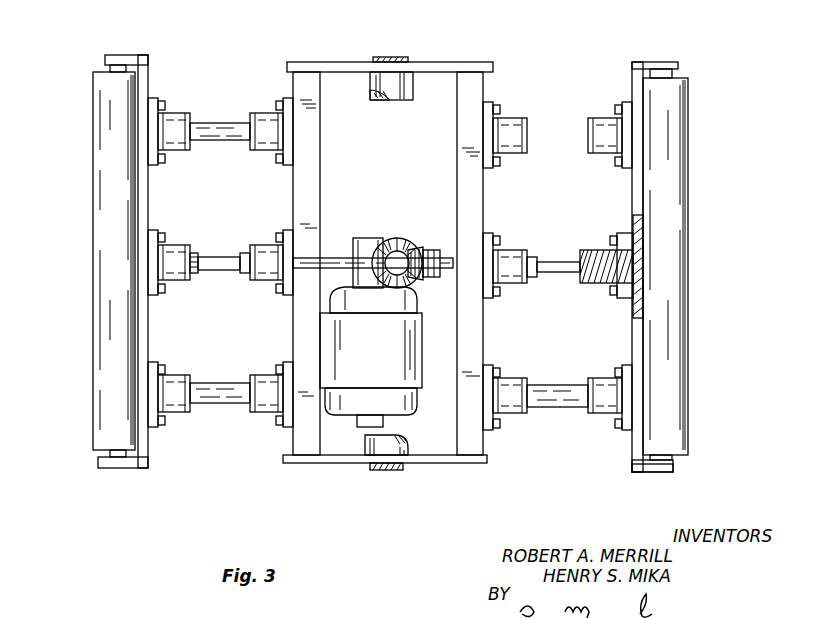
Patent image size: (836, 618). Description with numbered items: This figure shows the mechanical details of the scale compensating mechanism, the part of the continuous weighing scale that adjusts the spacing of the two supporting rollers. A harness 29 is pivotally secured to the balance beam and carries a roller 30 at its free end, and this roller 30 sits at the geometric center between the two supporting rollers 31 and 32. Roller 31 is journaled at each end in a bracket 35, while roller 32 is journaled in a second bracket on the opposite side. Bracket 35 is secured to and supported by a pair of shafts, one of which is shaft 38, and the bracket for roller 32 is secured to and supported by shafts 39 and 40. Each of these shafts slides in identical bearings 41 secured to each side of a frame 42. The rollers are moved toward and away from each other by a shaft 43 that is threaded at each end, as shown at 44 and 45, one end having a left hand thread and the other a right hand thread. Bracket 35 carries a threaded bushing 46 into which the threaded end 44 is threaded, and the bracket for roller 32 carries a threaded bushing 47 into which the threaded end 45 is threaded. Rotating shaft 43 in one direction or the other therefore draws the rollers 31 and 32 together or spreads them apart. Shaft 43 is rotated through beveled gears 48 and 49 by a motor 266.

The harness 29 is at (395, 60).
The roller 30 is at (395, 88).
The supporting roller 31 is at (670, 143).
The supporting roller 32 is at (108, 380).
The bracket 35 is at (645, 465).
The shaft 38 is at (558, 395).
The shaft 39 is at (203, 132).
The shaft 40 is at (228, 395).
The bearing 41 is at (258, 124).
The frame 42 is at (304, 80).
The shaft 43 is at (223, 263).
The threaded end 44 is at (580, 275).
The threaded end 45 is at (196, 271).
The threaded bushing 46 is at (600, 282).
The threaded bushing 47 is at (172, 259).
The beveled gear 48 is at (396, 239).
The beveled gear 49 is at (414, 248).
The motor 266 is at (412, 380).